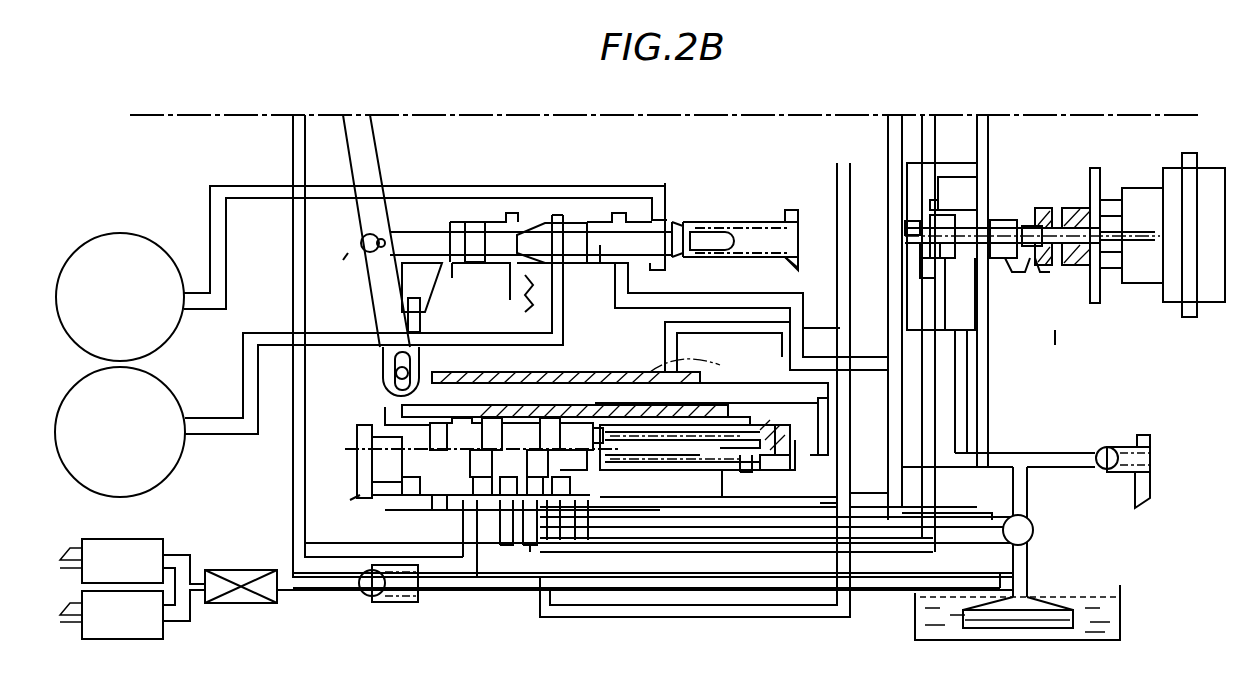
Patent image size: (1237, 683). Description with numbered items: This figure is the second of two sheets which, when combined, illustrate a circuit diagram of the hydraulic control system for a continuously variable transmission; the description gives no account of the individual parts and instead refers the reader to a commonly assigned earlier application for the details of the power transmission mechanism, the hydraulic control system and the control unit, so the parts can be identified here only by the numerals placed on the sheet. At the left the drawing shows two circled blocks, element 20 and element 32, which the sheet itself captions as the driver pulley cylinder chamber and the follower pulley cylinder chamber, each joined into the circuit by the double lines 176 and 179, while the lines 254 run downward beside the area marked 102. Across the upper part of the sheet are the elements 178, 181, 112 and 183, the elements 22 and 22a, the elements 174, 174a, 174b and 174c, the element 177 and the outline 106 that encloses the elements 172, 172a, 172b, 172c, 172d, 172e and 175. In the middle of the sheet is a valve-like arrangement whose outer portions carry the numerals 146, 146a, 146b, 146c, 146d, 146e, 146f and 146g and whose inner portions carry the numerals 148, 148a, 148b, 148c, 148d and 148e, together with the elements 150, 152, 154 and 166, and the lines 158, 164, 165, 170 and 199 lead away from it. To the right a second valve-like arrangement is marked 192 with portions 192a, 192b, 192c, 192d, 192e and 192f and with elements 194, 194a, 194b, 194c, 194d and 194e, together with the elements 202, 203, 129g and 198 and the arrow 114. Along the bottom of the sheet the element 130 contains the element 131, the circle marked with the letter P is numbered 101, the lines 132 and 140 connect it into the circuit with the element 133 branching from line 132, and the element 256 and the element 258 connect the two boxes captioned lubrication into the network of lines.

The driver pulley cylinder chamber 20 is at (177, 471).
The oil pump 22 is at (428, 285).
The pump element 22a is at (421, 314).
The follower pulley cylinder chamber 32 is at (168, 342).
The oil pump 101 is at (1039, 516).
The hydraulic control valve 102 is at (358, 515).
The transmission ratio detecting housing 106 is at (680, 180).
The belt tension direction 112 is at (344, 270).
The engine torque input 114 is at (1064, 332).
The bearings 129g is at (1058, 262).
The oil reservoir 130 is at (1122, 603).
The oil strainer 131 is at (1035, 603).
The oil passage 132 is at (720, 500).
The relief valve 133 is at (1110, 446).
The oil passage 140 is at (963, 522).
The valve body 146 is at (435, 445).
The valve body port 146a is at (365, 478).
The valve body port 146b is at (418, 515).
The valve body port 146c is at (462, 425).
The valve body port 146d is at (470, 505).
The valve body port 146e is at (508, 505).
The valve body port 146f is at (553, 505).
The valve body port 146g is at (580, 440).
The spool 148 is at (360, 460).
The spool land 148a is at (398, 482).
The spool land 148b is at (365, 440).
The spool land 148c is at (496, 428).
The spool land 148d is at (543, 440).
The spool land 148e is at (580, 472).
The piston 150 is at (760, 447).
The spring 152 is at (723, 364).
The piston chamber 154 is at (745, 462).
The oil passage 158 is at (822, 392).
The oil passage 164 is at (468, 592).
The oil passage 165 is at (592, 607).
The drain port 166 is at (440, 500).
The oil passage 170 is at (582, 505).
The shaft 172 is at (730, 220).
The shaft portion 172a is at (510, 266).
The shaft portion 172b is at (560, 265).
The shaft portion 172c is at (586, 290).
The shaft groove 172d is at (657, 272).
The shaft end 172e is at (790, 270).
The rod 174 is at (410, 230).
The rod flange 174a is at (470, 230).
The rod collar 174b is at (575, 230).
The rod flange 174c is at (676, 220).
The stopper 175 is at (778, 220).
The oil passage 176 is at (276, 350).
The spring 177 is at (522, 305).
The belt 178 is at (356, 155).
The oil passage 179 is at (260, 200).
The roller 181 is at (362, 240).
The guide slot 183 is at (390, 372).
The control valve spool 192 is at (990, 215).
The valve portion 192a is at (915, 240).
The valve portion 192b is at (940, 258).
The valve portion 192c is at (958, 262).
The valve portion 192d is at (982, 262).
The valve portion 192e is at (1012, 270).
The valve portion 192f is at (1045, 270).
The valve sleeve 194 is at (905, 243).
The valve land 194a is at (918, 228).
The valve land 194b is at (915, 232).
The valve land 194c is at (1003, 222).
The valve land 194d is at (1035, 222).
The valve connector 194e is at (1090, 200).
The pulley 198 is at (1205, 162).
The oil passage 199 is at (530, 555).
The valve chamber 202 is at (936, 195).
The plate 203 is at (1063, 165).
The oil passage 254 is at (289, 260).
The lubrication valve 256 is at (241, 570).
The lubrication pump 258 is at (365, 594).